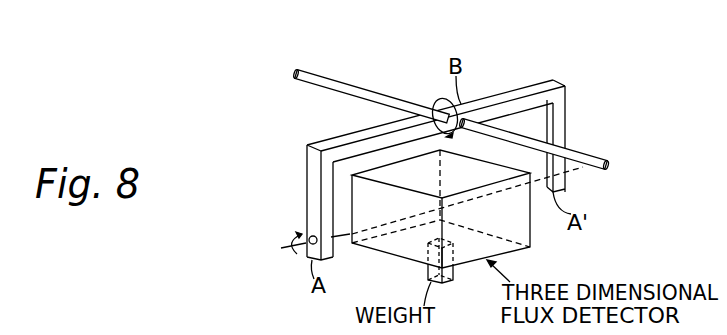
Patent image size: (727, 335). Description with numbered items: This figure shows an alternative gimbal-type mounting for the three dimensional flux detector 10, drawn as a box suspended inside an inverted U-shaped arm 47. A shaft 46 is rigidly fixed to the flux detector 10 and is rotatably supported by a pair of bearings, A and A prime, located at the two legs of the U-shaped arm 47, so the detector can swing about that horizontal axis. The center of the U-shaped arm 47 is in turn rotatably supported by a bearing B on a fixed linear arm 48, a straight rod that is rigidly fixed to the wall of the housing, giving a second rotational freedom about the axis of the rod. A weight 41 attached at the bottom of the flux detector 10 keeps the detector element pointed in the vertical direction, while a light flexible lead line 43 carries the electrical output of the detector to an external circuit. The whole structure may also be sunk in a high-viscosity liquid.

The three dimensional flux detector 10 is at (531, 228).
The weight 41 is at (455, 280).
The light flexible lead line 43 is at (463, 170).
The shaft 46 is at (350, 236).
The U-shaped arm 47 is at (517, 84).
The fixed linear arm 48 is at (611, 157).